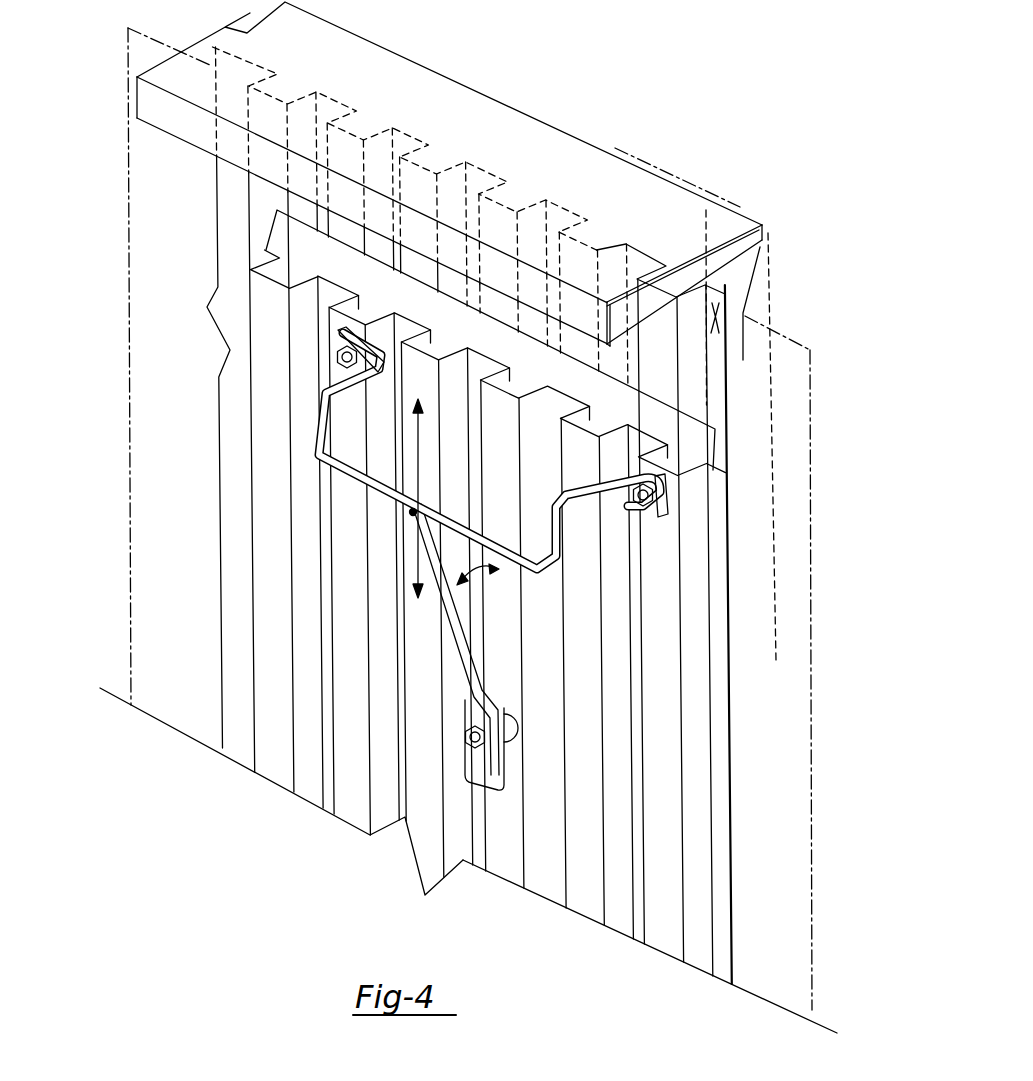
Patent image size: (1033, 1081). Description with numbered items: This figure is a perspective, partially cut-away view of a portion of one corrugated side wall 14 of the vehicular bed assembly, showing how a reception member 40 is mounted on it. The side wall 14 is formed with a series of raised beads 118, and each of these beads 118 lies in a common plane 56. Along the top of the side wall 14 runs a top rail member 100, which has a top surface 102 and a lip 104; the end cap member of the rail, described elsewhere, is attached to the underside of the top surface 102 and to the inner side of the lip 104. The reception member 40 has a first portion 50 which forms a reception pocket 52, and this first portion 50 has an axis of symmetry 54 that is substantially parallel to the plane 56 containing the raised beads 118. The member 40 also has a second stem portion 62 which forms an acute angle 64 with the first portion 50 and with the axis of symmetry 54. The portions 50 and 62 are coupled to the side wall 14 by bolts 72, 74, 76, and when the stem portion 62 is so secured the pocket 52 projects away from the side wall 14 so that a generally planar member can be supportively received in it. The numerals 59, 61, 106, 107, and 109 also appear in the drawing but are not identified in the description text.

The side wall 14 is at (468, 594).
The reception member 40 is at (166, 489).
The first portion 50 is at (578, 568).
The reception pocket 52 is at (470, 445).
The axis of symmetry 54 is at (410, 514).
The plane 56 is at (808, 480).
The hidden edge line 59 is at (706, 210).
The backing plate 61 is at (715, 398).
The second stem portion 62 is at (480, 677).
The acute angle 64 is at (478, 586).
The bolt 72 is at (340, 357).
The bolt 74 is at (636, 502).
The bolt 76 is at (463, 738).
The top rail member 100 is at (449, 174).
The top surface 102 is at (660, 222).
The lip 104 is at (183, 124).
The cap end edge 106 is at (778, 263).
The cap end flange 107 is at (766, 240).
The weld location 109 is at (745, 310).
The raised bead 118 is at (663, 922).